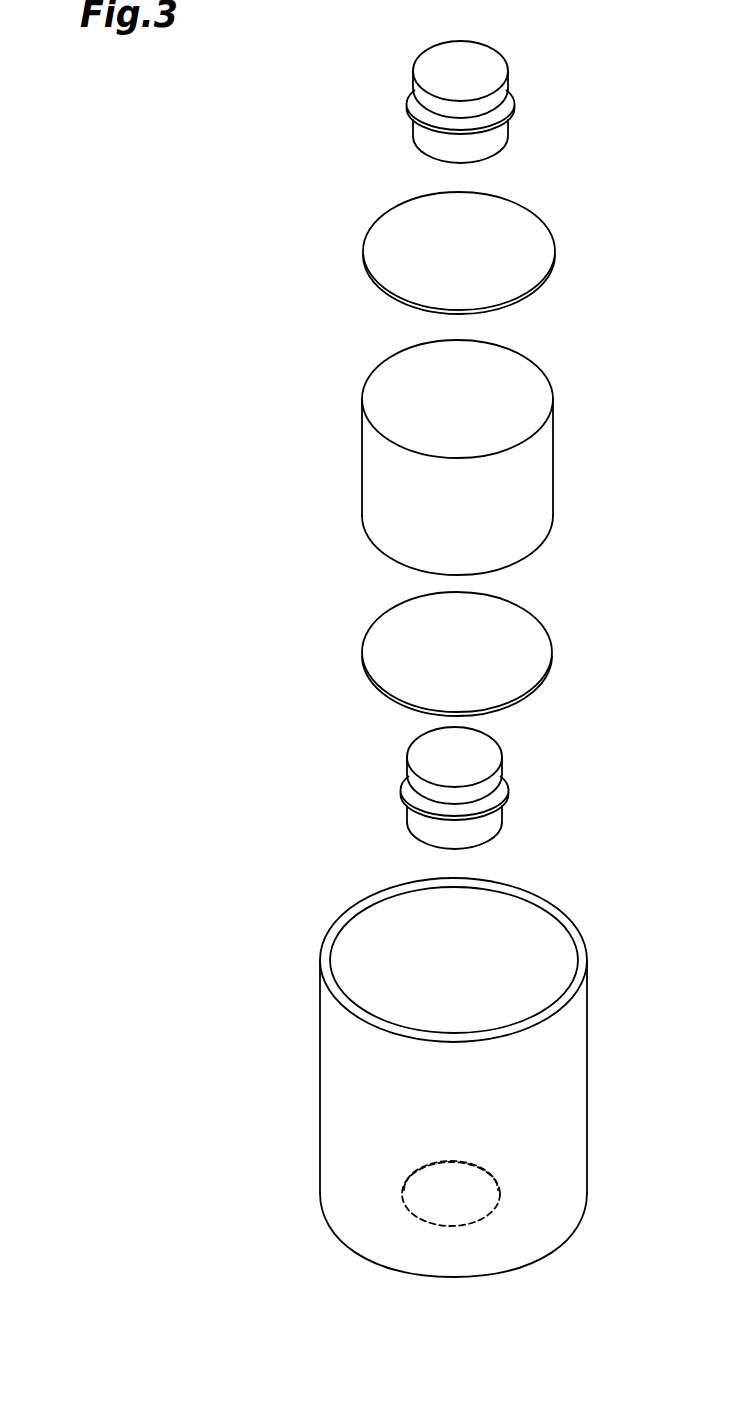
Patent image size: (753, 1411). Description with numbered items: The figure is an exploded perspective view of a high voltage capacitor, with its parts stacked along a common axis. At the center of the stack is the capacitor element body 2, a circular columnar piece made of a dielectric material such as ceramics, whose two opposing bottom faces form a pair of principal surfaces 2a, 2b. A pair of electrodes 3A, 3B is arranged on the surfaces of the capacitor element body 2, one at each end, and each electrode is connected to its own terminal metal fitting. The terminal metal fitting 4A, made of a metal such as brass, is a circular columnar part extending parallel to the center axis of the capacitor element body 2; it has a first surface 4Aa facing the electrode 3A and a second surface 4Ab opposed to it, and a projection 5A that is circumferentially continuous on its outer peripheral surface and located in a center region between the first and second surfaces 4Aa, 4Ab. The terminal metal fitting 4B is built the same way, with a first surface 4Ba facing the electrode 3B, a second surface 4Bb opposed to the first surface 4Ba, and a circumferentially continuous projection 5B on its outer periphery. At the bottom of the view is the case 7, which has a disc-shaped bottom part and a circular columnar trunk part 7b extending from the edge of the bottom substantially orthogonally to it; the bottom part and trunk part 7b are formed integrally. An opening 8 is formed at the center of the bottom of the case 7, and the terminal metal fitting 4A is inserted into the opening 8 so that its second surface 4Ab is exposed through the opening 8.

The capacitor element body 2 is at (475, 456).
The principal surface 2a is at (493, 572).
The principal surface 2b is at (532, 385).
The electrode 3A is at (527, 642).
The electrode 3B is at (532, 232).
The terminal metal fitting 4A is at (454, 798).
The first surface 4Aa is at (420, 748).
The second surface 4Ab is at (430, 845).
The projection 5A is at (405, 810).
The terminal metal fitting 4B is at (461, 98).
The first surface 4Ba is at (433, 160).
The second surface 4Bb is at (435, 63).
The projection 5B is at (412, 120).
The case 7 is at (435, 1077).
The trunk part 7b is at (332, 1110).
The opening 8 is at (420, 1222).